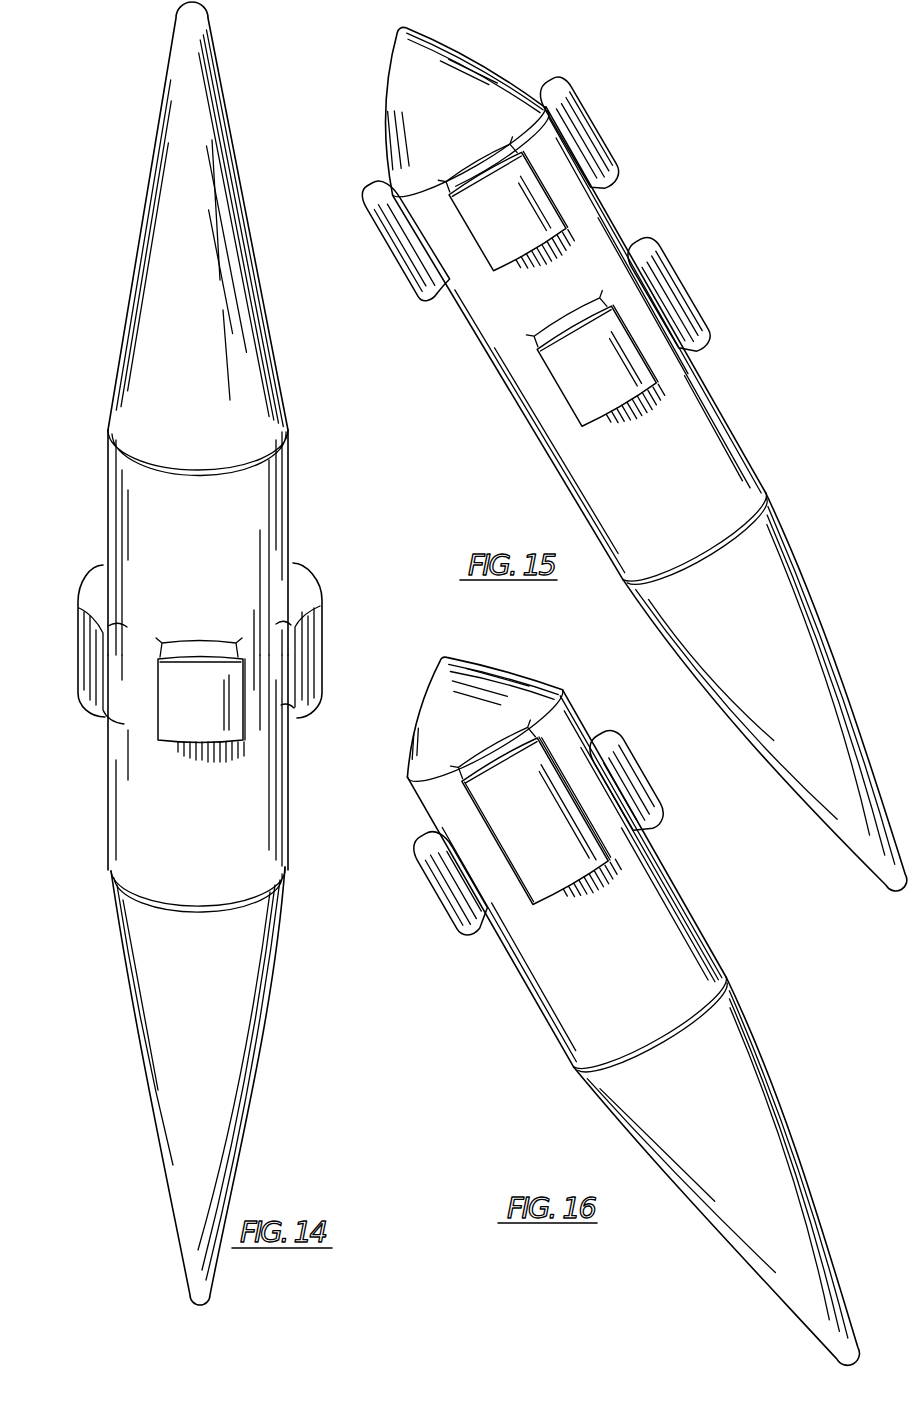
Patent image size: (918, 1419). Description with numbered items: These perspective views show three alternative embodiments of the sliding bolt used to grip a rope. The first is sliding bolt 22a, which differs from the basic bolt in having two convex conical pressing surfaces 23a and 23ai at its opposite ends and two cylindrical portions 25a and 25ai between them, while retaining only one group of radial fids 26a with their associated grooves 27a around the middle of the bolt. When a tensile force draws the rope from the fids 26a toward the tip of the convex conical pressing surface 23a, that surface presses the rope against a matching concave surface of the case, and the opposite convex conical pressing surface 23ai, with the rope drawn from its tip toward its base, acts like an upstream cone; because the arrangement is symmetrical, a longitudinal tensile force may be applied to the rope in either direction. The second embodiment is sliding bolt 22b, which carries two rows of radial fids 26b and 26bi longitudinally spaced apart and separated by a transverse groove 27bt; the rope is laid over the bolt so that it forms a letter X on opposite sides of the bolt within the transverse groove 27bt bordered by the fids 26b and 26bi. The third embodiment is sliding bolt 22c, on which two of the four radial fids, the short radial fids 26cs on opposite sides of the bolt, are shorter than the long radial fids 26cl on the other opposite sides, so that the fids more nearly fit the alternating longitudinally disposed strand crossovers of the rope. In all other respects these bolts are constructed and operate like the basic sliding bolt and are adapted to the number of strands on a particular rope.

In FIG. 14, the sliding bolt 22a is at (168, 653).
In FIG. 14, the convex conical pressing surface 23ai is at (170, 215).
In FIG. 14, the cylindrical portion 25ai is at (130, 478).
In FIG. 14, the cylindrical portion 25a is at (140, 786).
In FIG. 14, the grooves 27a is at (140, 665).
In FIG. 14, the radial fids 26a is at (92, 681).
In FIG. 14, the convex conical pressing surface 23a is at (166, 1048).
In FIG. 15, the sliding bolt 22b is at (607, 474).
In FIG. 15, the radial fids 26bi is at (522, 185).
In FIG. 15, the transverse groove 27bt is at (563, 270).
In FIG. 15, the radial fids 26b is at (605, 338).
In FIG. 16, the sliding bolt 22c is at (635, 1012).
In FIG. 16, the long radial fids 26cl is at (507, 797).
In FIG. 16, the short radial fids 26cs is at (642, 788).